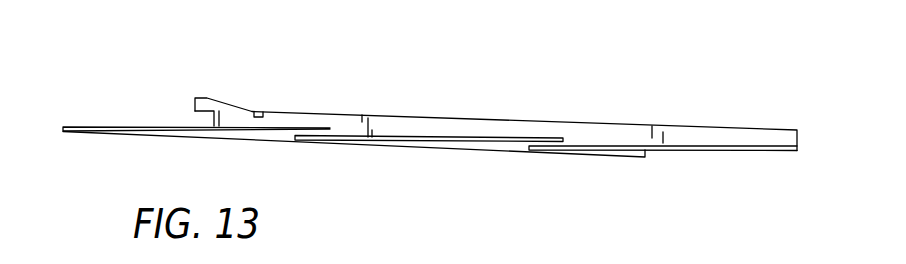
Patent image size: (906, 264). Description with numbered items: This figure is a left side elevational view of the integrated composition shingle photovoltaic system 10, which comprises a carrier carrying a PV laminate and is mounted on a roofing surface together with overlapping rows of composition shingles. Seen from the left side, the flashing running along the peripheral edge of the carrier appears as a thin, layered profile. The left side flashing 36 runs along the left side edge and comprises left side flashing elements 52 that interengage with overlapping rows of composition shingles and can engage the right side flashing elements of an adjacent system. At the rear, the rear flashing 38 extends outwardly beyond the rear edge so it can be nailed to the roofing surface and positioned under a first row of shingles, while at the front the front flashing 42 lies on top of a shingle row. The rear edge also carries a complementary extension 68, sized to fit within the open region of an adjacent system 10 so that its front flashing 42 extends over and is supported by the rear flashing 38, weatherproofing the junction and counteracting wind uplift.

The integrated composition shingle photovoltaic (PV) system 10 is at (507, 57).
The left side flashing 36 is at (385, 147).
The rear flashing 38 is at (60, 130).
The front flashing 42 is at (798, 143).
The left side flashing elements 52 is at (490, 139).
The complementary extension 68 is at (204, 102).